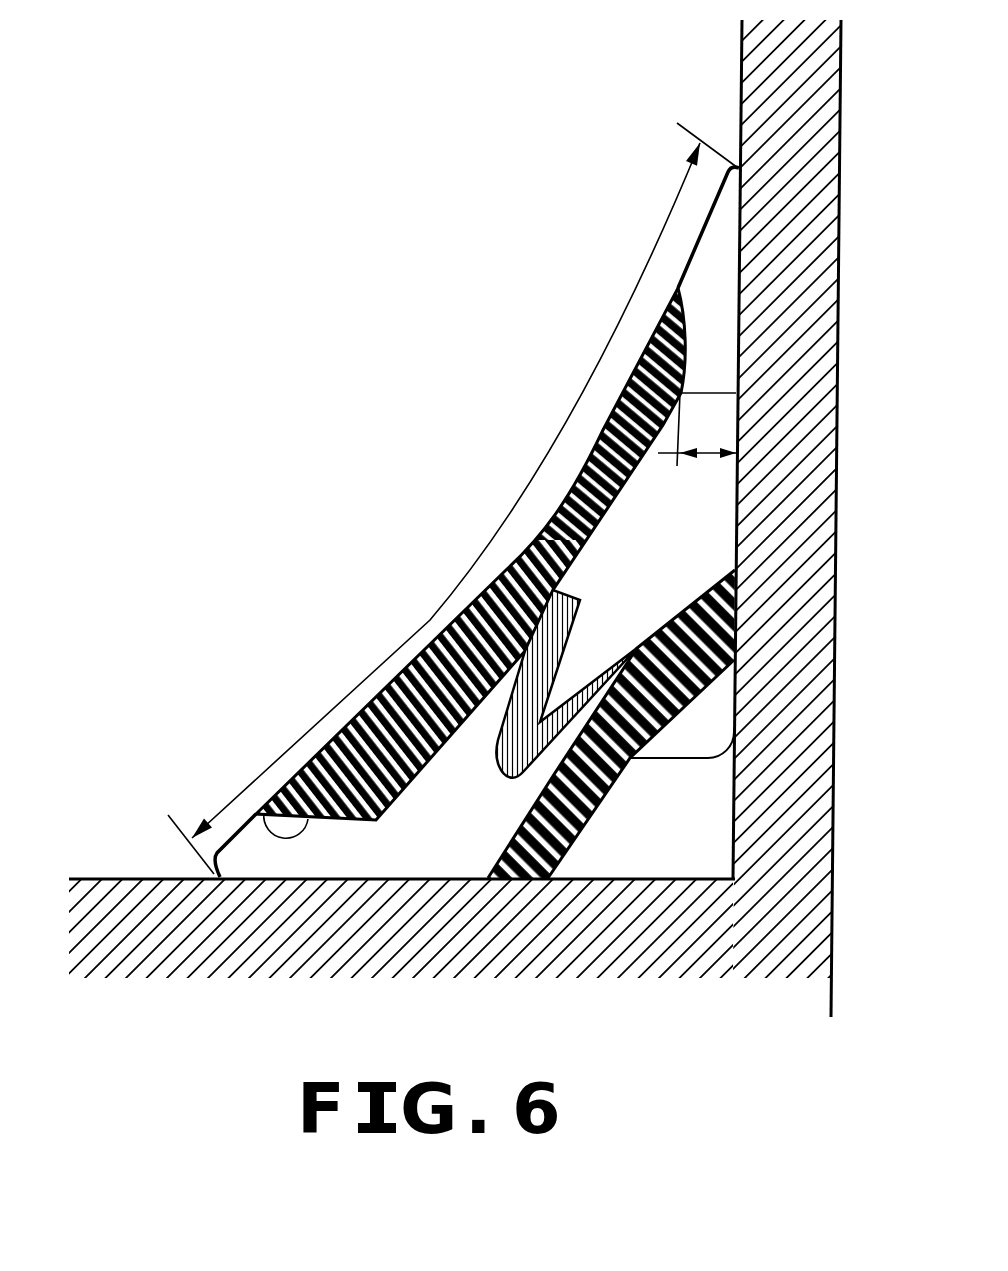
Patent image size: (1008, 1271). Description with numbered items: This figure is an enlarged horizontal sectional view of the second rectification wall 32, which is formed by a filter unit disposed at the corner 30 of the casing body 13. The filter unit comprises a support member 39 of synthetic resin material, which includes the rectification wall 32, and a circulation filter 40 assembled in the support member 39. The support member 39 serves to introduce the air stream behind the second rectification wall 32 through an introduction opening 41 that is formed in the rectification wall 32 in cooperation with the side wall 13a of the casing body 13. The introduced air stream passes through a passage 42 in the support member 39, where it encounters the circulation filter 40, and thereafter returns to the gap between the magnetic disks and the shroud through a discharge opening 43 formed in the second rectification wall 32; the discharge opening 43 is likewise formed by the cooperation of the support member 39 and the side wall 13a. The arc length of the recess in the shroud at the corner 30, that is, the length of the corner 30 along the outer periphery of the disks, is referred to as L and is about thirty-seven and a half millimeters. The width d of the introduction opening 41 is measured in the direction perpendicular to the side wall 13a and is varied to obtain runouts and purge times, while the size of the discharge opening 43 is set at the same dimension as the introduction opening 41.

The casing body 13 is at (837, 605).
The side wall 13a is at (743, 62).
The corner 30 is at (590, 880).
The second rectification wall 32 is at (587, 462).
The support member 39 is at (680, 760).
The circulation filter 40 is at (570, 638).
The introduction opening 41 is at (682, 318).
The passage 42 is at (669, 583).
The discharge opening 43 is at (274, 829).
The arc length L is at (446, 490).
The width of introduction opening d is at (697, 429).